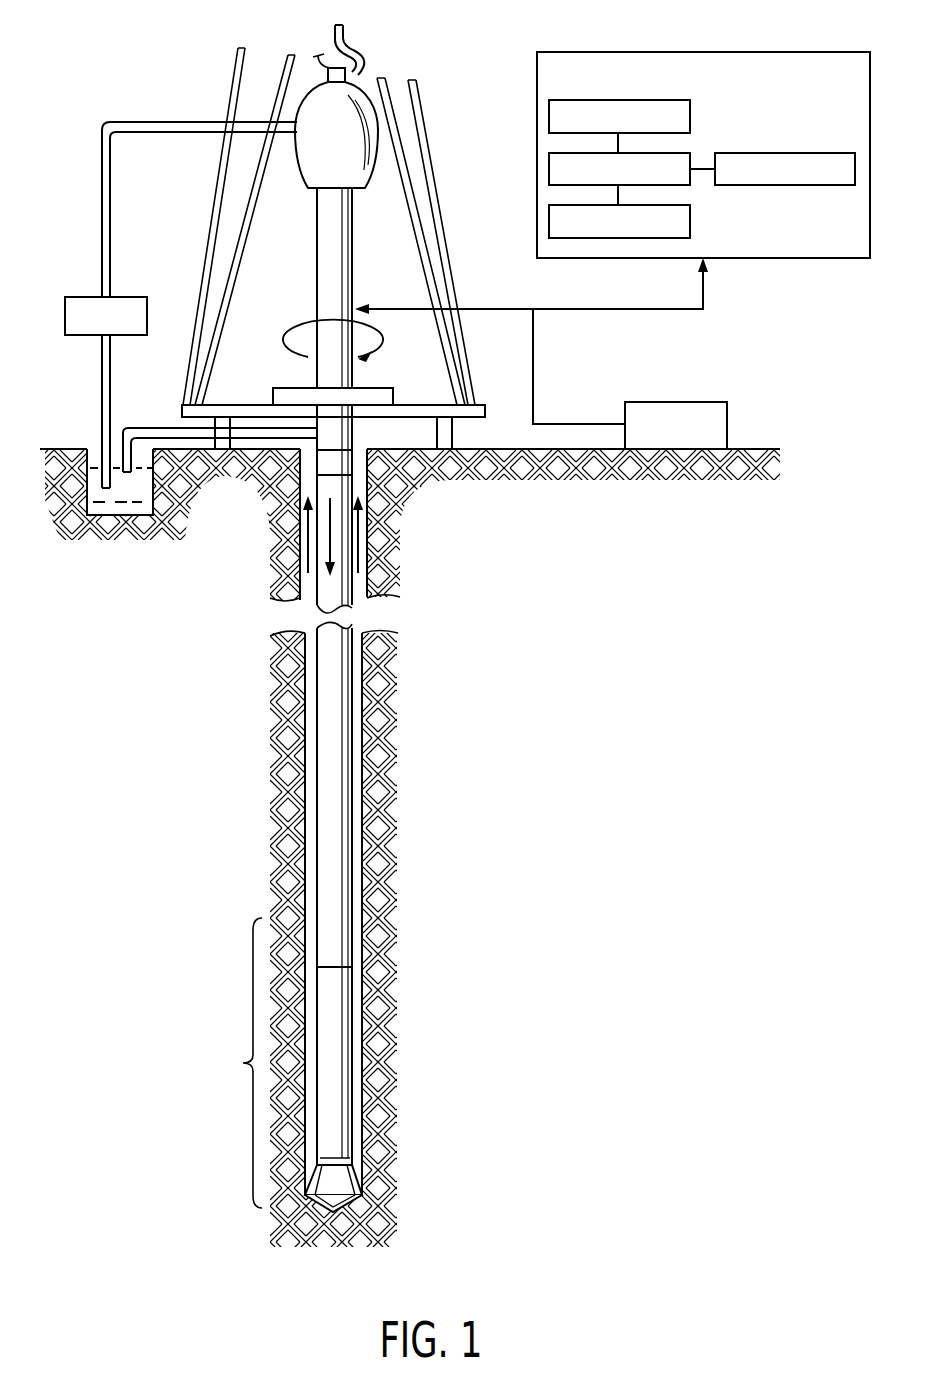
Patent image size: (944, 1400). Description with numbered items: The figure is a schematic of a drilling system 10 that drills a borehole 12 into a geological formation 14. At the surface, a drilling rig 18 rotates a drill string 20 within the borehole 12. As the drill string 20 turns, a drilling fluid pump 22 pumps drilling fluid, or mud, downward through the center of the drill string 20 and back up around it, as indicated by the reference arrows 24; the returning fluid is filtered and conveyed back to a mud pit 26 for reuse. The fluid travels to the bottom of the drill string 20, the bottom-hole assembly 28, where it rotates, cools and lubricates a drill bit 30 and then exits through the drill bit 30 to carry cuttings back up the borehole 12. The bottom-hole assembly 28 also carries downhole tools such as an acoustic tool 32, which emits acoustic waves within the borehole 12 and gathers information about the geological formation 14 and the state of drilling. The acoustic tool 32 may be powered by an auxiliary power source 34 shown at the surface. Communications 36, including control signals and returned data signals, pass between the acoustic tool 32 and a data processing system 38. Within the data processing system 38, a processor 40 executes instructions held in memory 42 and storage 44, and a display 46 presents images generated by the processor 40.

The drilling system 10 is at (500, 34).
The borehole 12 is at (303, 773).
The geological formation 14 is at (487, 811).
The drilling rig 18 is at (450, 103).
The drill string 20 is at (333, 440).
The drilling fluid pump 22 is at (65, 311).
The reference arrows 24 is at (307, 540).
The mud pit 26 is at (123, 507).
The bottom-hole assembly 28 is at (233, 1063).
The drill bit 30 is at (340, 1183).
The acoustic tool 32 is at (340, 1072).
The auxiliary power source 34 is at (674, 402).
The communications 36 is at (614, 309).
The data processing system 38 is at (703, 52).
The processor 40 is at (549, 170).
The memory 42 is at (549, 117).
The storage 44 is at (690, 218).
The display 46 is at (783, 153).